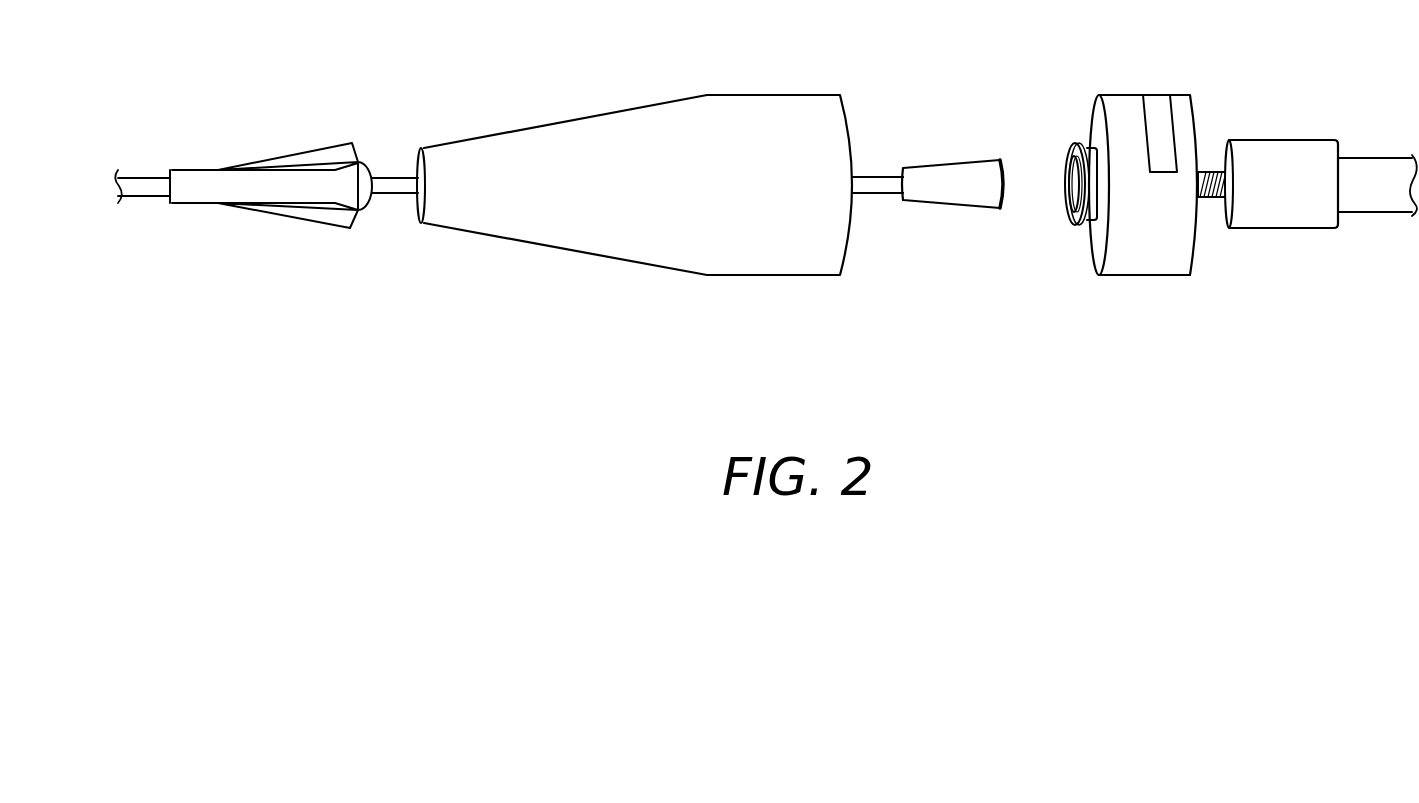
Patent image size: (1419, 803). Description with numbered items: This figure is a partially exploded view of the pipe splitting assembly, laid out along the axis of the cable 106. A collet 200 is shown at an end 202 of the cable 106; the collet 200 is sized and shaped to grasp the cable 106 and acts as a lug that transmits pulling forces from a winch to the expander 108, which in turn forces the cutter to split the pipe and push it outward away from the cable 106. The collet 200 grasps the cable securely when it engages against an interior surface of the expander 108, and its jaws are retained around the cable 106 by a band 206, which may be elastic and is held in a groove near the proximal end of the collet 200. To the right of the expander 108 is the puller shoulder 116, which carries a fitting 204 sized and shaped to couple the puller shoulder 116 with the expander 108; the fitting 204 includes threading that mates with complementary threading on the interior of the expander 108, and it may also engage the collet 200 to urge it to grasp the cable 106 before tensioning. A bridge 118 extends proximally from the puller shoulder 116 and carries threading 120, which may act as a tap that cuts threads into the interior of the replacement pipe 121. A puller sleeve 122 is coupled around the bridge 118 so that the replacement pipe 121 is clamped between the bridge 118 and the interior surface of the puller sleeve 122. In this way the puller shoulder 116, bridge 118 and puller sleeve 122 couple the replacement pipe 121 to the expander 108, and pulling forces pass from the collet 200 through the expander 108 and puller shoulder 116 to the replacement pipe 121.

The cable 106 is at (393, 176).
The expander 108 is at (550, 125).
The collet 200 is at (957, 188).
The end of the cable 202 is at (878, 175).
The band 206 is at (1000, 211).
The fitting 204 is at (1072, 143).
The puller shoulder 116 is at (1121, 95).
The bridge 118 is at (1212, 186).
The threading 120 is at (1213, 170).
The replacement pipe 121 is at (1374, 162).
The puller sleeve 122 is at (1280, 230).